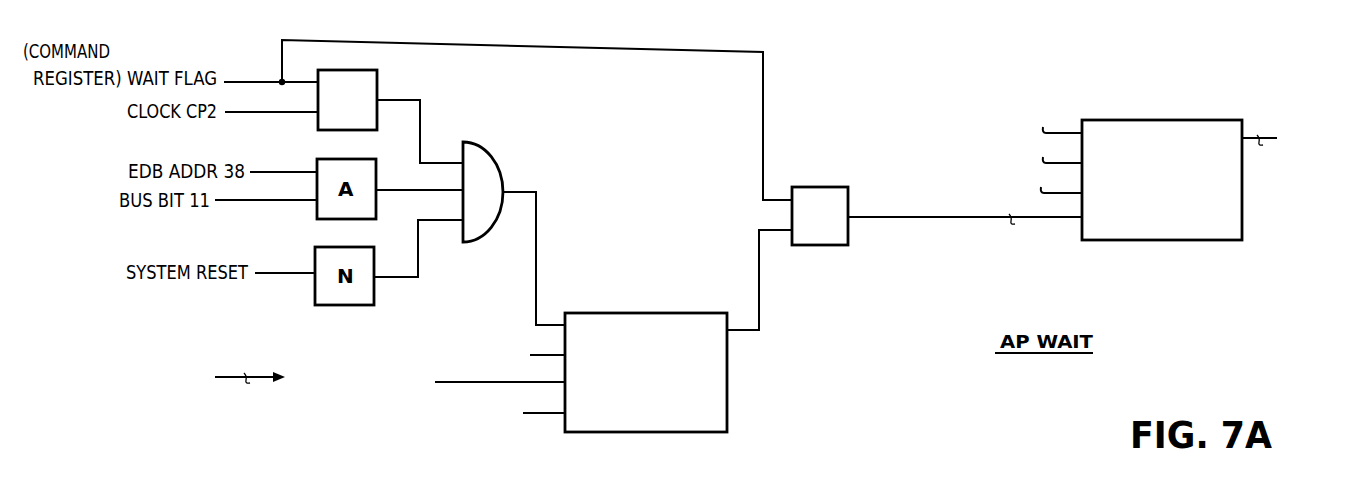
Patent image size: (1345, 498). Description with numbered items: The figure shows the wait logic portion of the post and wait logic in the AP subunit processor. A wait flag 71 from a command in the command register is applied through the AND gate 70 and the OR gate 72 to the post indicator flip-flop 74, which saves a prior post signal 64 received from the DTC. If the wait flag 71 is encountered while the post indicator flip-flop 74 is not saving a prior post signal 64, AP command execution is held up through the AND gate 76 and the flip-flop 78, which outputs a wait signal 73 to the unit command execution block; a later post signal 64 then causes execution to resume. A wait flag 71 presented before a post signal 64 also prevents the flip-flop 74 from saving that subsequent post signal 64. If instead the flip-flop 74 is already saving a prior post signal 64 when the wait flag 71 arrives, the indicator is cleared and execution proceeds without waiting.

The post signal 64 is at (336, 364).
The AND gate 70 is at (381, 78).
The wait flag 71 is at (260, 81).
The OR gate 72 is at (478, 151).
The wait signal 73 is at (1292, 135).
The post indicator flip-flop 74 is at (728, 382).
The AND gate 76 is at (818, 186).
The flip-flop 78 is at (1242, 214).